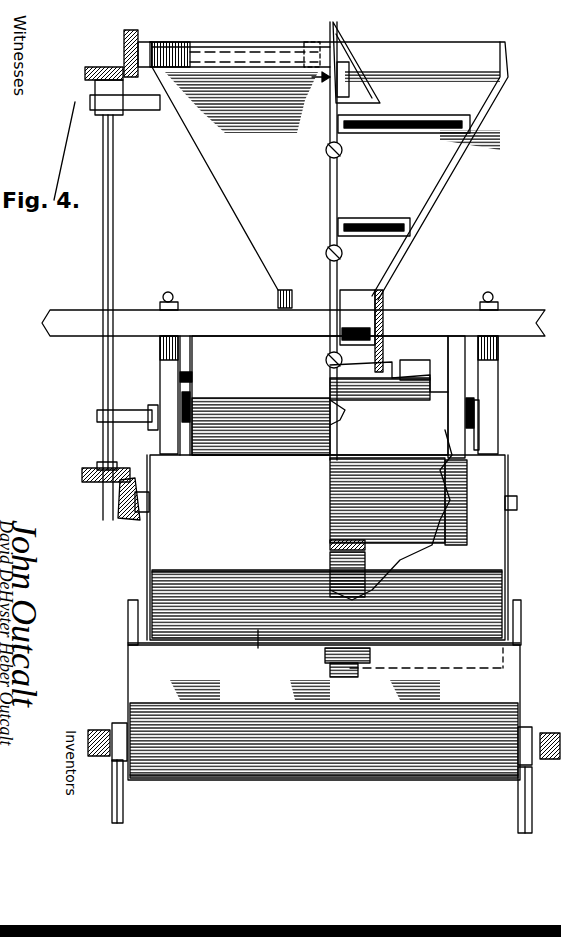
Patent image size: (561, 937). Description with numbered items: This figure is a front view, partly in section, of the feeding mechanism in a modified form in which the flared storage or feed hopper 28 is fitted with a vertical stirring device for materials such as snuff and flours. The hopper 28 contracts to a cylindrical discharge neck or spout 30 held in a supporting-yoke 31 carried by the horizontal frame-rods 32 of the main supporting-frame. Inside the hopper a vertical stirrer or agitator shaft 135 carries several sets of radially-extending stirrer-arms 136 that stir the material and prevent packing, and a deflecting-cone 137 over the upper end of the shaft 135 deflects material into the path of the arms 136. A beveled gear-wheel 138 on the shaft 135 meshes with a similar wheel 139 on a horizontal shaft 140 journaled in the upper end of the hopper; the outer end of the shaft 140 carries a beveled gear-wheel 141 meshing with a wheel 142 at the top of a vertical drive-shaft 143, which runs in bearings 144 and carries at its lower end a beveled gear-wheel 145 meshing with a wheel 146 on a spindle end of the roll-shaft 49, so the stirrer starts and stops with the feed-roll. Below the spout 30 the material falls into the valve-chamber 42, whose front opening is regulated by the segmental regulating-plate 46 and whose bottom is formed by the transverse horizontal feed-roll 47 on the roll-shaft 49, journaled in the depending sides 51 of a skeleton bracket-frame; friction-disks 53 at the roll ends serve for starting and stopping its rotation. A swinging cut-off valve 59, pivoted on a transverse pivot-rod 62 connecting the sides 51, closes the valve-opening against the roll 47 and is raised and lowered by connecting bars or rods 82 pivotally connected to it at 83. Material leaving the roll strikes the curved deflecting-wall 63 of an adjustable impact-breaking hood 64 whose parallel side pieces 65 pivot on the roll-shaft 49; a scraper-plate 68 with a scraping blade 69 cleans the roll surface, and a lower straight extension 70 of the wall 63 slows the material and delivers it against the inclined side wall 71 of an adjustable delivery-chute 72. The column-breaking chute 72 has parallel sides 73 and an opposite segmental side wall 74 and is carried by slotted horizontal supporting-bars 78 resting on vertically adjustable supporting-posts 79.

The storage or feed hopper 28 is at (329, 171).
The discharge neck or spout 30 is at (357, 317).
The supporting-yoke 31 is at (272, 314).
The frame-rods 32 is at (70, 320).
The valve-chamber 42 is at (430, 382).
The segmental regulating-plate 46 is at (389, 393).
The feed-roll 47 is at (391, 515).
The roll-shaft 49 is at (140, 514).
The depending sides of skeleton bracket-frame 51 is at (162, 366).
The friction-disks 53 is at (465, 490).
The swinging cut-off valve 59 is at (455, 305).
The transverse pivot-rod 62 is at (192, 378).
The curved deflecting-wall 63 is at (160, 575).
The adjustable hood 64 is at (327, 547).
The parallel side pieces 65 is at (148, 553).
The scraper-plate 68 is at (330, 566).
The scraping blade or edge 69 is at (330, 540).
The lower straight extension 70 is at (249, 650).
The inclined side wall 71 is at (521, 630).
The adjustable delivery-chute 72 is at (324, 712).
The parallel sides 73 is at (130, 645).
The segmental side wall 74 is at (300, 772).
The horizontal supporting-bars 78 is at (120, 726).
The supporting-posts 79 is at (113, 812).
The connecting bars or rods 82 is at (180, 437).
The pivotal connection 83 is at (180, 402).
The vertical stirrer or agitator shaft 135 is at (338, 196).
The stirrer-arms 136 is at (425, 134).
The deflecting-cone 137 is at (350, 50).
The beveled gear-wheel 138 is at (330, 86).
The beveled gear-wheel 139 is at (320, 44).
The horizontal shaft 140 is at (213, 50).
The beveled gear-wheel 141 is at (136, 42).
The beveled gear-wheel 142 is at (110, 68).
The post 143 is at (113, 213).
The bearings 144 is at (148, 110).
The beveled gear-wheel 145 is at (98, 470).
The beveled gear-wheel 146 is at (120, 503).